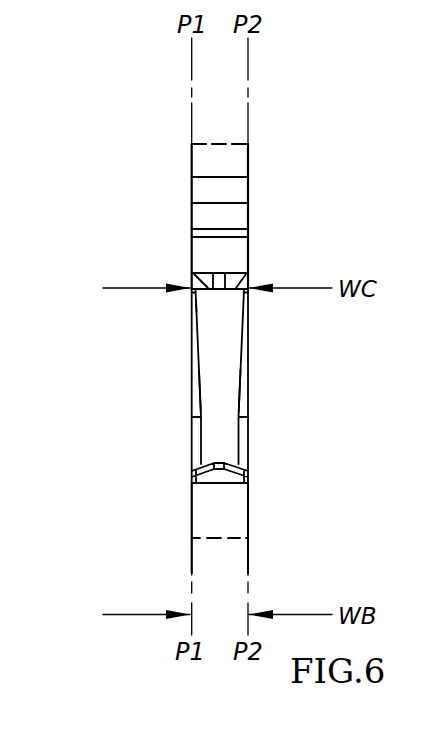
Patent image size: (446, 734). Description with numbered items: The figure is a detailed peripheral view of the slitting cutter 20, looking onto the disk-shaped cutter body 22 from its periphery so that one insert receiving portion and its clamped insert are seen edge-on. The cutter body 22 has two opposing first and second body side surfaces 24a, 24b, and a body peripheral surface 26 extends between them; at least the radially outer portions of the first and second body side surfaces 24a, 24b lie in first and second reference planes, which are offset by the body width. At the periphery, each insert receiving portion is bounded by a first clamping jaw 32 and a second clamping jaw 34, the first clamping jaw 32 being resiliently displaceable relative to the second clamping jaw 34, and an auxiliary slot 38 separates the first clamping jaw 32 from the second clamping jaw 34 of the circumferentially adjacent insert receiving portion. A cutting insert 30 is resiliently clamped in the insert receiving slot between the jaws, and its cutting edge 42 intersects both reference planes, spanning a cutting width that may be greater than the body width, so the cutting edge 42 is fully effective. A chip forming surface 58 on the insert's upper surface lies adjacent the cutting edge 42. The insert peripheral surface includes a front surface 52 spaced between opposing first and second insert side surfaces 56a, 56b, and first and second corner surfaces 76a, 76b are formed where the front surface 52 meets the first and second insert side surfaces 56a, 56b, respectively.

The slitting cutter 20 is at (289, 143).
The cutter body 22 is at (215, 193).
The first body side surface 24a is at (190, 503).
The second body side surface 24b is at (249, 500).
The body peripheral surface 26 is at (222, 167).
The cutting insert 30 is at (232, 334).
The first clamping jaw 32 is at (228, 258).
The second clamping jaw 34 is at (228, 519).
The auxiliary slot 38 is at (228, 218).
The cutting edge 42 is at (248, 304).
The front surface 52 is at (217, 309).
The first insert side surface 56a is at (191, 446).
The second insert side surface 56b is at (250, 448).
The chip forming surface 58 is at (248, 304).
The first corner surface 76a is at (197, 384).
The second corner surface 76b is at (246, 386).